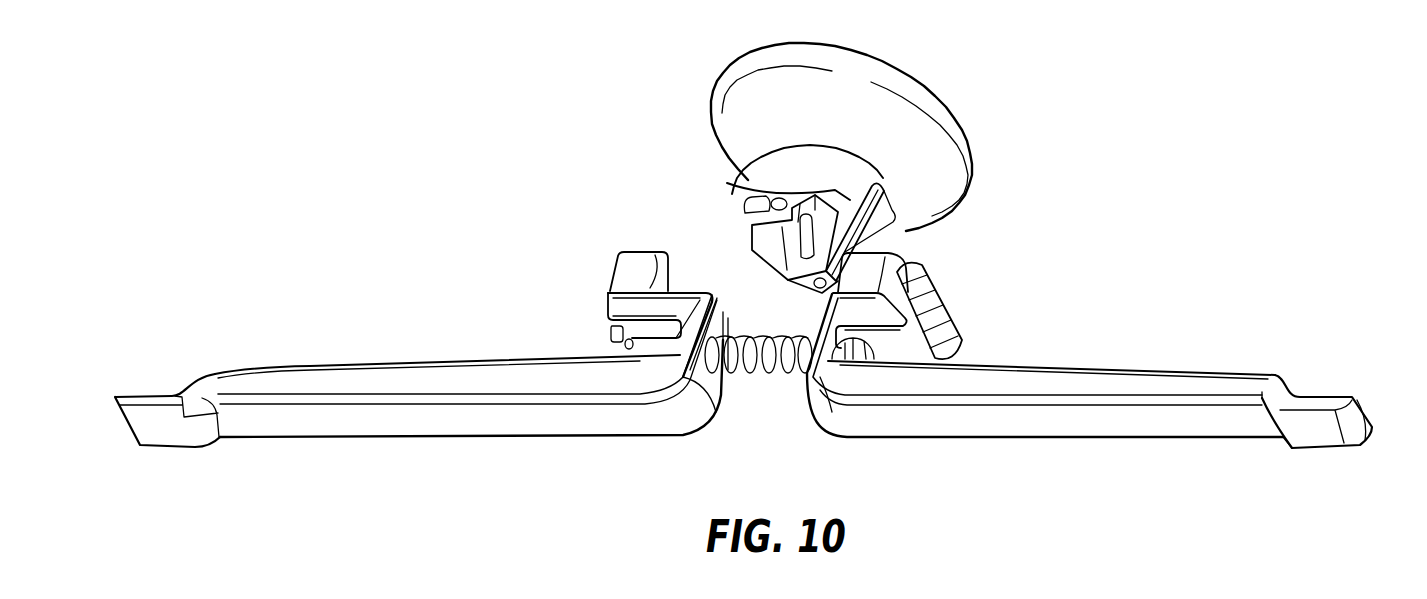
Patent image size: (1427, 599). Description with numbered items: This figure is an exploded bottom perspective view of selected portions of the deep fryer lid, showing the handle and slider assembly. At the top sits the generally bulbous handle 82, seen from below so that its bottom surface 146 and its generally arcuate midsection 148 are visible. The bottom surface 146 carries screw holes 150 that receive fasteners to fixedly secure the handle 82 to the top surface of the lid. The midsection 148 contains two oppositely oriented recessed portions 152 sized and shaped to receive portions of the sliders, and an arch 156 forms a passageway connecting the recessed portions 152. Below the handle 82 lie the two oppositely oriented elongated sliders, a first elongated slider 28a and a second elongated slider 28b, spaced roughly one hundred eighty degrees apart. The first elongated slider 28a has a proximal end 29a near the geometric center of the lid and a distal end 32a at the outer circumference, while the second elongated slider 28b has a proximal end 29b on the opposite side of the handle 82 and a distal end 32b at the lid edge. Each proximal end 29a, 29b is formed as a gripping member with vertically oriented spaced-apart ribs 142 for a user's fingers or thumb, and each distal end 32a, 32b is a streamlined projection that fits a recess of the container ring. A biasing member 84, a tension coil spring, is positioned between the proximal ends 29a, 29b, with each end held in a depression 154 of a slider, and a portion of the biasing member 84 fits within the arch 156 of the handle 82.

The handle 82 is at (873, 60).
The midsection 148 is at (770, 170).
The bottom surface 146 is at (743, 205).
The screw holes 150 is at (762, 212).
The recessed portions 152 is at (752, 240).
The arch 156 is at (872, 212).
The proximal end 29a is at (637, 260).
The proximal end 29b is at (910, 272).
The ribs 142 is at (616, 335).
The depression 154 is at (714, 380).
The biasing member 84 is at (748, 372).
The first elongated slider 28a is at (454, 436).
The second elongated slider 28b is at (1064, 437).
The distal end 32a is at (148, 400).
The distal end 32b is at (1325, 396).